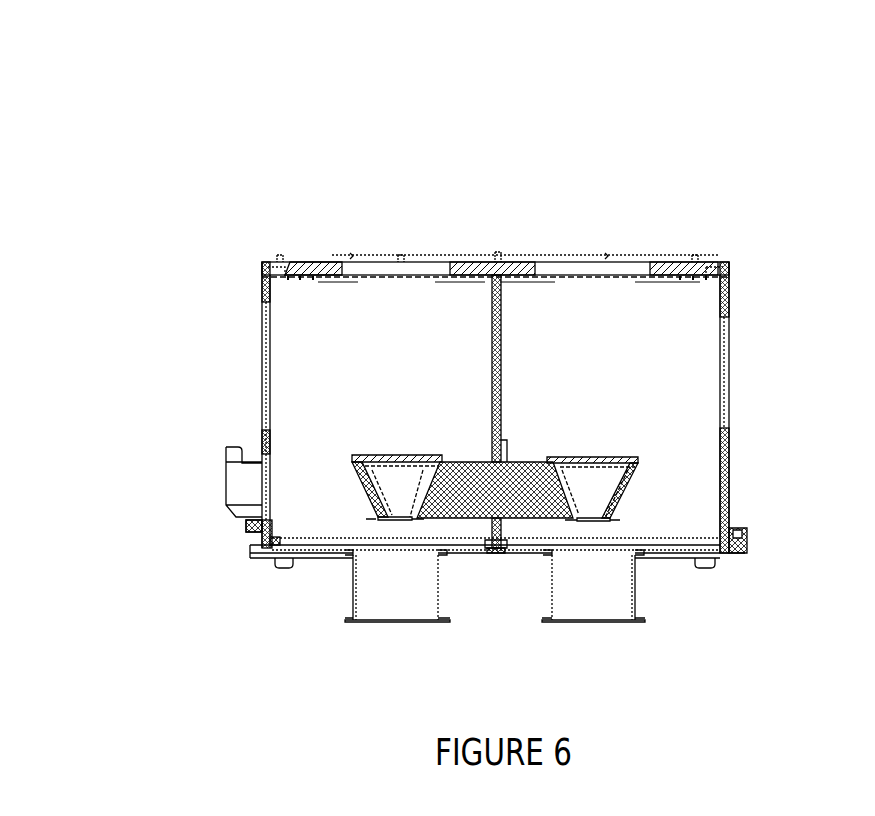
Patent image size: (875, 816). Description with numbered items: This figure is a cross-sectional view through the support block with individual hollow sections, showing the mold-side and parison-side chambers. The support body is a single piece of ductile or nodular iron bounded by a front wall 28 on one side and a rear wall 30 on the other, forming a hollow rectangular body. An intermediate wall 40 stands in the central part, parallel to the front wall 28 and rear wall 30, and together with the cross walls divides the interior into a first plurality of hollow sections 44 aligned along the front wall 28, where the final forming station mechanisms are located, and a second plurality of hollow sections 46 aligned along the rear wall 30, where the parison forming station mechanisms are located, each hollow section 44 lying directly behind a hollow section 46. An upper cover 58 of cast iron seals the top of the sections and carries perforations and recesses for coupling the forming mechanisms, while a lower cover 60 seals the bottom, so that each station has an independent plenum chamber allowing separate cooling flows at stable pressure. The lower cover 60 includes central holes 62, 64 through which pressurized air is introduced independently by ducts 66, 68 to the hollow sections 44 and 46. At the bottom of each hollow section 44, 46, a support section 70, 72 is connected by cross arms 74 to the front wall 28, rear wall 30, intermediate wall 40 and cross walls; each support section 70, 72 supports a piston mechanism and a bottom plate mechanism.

The front wall 28 is at (729, 428).
The rear wall 30 is at (262, 410).
The intermediate wall 40 is at (497, 378).
The first plurality of hollow sections 44 is at (668, 394).
The second plurality of hollow sections 46 is at (310, 378).
The upper cover 58 is at (320, 260).
The lower cover 60 is at (302, 546).
The central hole 62 is at (392, 553).
The central hole 64 is at (593, 553).
The duct 66 is at (347, 593).
The duct 68 is at (645, 595).
The support section 70 is at (393, 456).
The support section 72 is at (593, 463).
The cross arms 74 is at (460, 470).